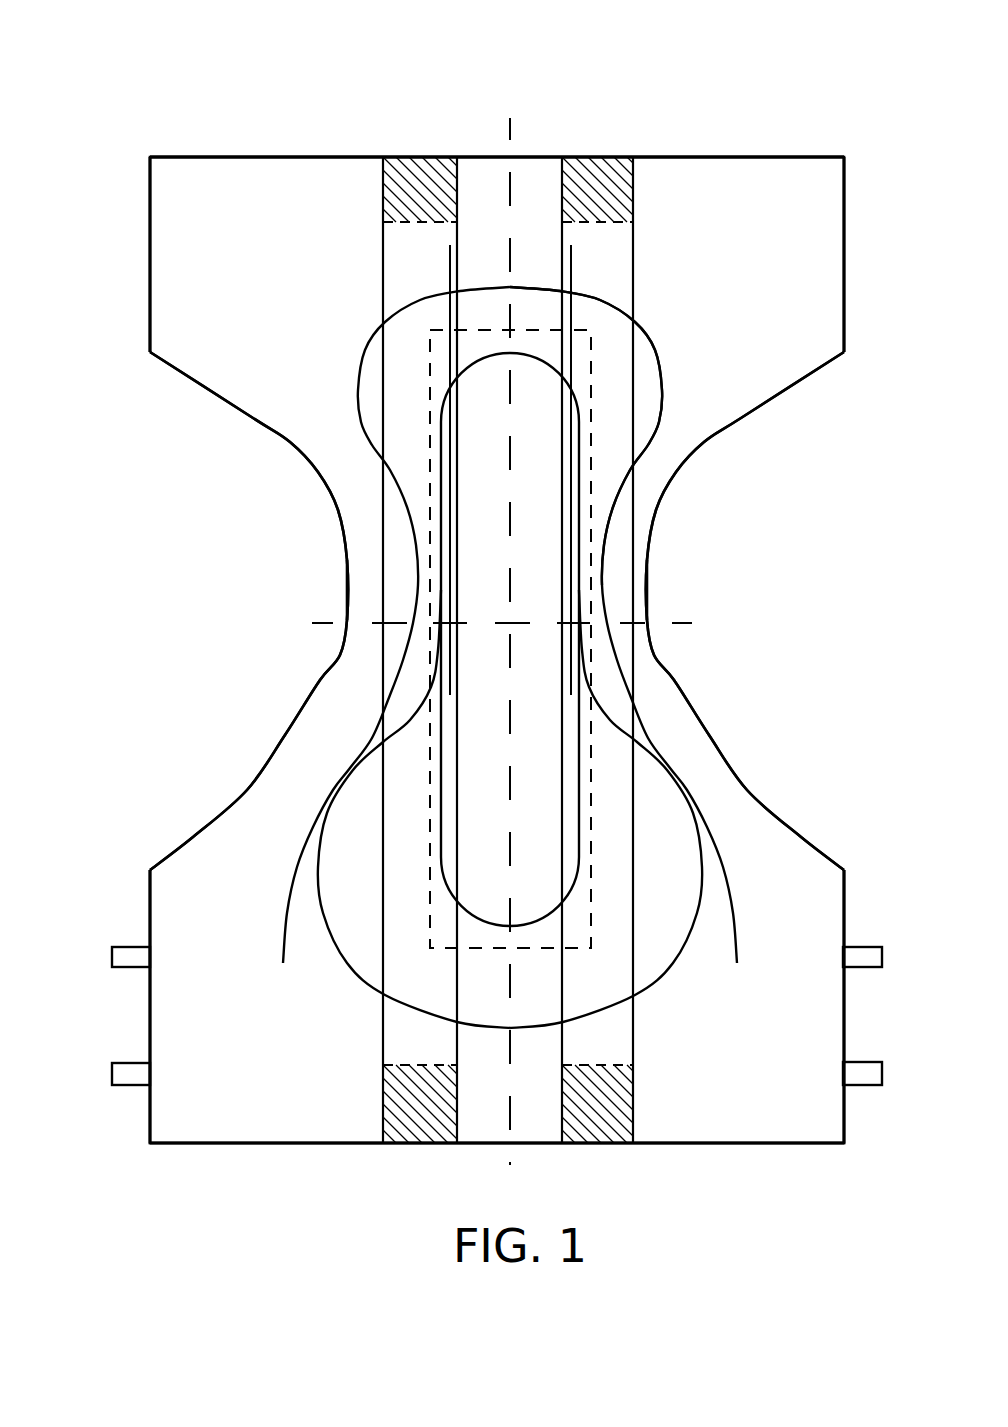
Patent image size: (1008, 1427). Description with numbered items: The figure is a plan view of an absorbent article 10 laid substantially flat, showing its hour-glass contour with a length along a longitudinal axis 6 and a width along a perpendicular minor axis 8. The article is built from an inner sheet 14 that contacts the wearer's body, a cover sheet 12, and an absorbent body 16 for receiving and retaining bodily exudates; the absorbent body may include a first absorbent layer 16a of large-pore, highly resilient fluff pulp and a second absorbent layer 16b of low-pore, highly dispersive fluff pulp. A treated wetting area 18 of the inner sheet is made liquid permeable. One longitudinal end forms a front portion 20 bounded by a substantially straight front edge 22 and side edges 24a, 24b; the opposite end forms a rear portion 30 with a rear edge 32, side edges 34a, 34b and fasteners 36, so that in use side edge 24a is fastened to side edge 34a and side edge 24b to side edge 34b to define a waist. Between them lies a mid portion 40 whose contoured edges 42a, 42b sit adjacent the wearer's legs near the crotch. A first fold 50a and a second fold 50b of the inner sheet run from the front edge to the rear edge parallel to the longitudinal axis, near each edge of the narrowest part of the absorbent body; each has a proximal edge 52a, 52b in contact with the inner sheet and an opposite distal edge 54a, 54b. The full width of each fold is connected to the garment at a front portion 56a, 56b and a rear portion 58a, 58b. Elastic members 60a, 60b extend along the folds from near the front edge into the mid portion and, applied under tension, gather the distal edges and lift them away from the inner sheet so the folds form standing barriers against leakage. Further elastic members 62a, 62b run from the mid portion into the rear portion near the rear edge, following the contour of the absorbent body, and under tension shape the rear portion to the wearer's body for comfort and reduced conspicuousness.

The longitudinal axis 6 is at (505, 127).
The minor axis 8 is at (690, 625).
The absorbent article 10 is at (175, 110).
The cover sheet 12 is at (270, 192).
The inner sheet 14 is at (177, 216).
The absorbent body 16 is at (646, 396).
The first absorbent layer 16a is at (440, 833).
The second absorbent layer 16b is at (657, 355).
The wetting area 18 is at (441, 330).
The front portion 20 is at (131, 257).
The front edge 22 is at (745, 156).
The side edge 24a is at (150, 180).
The side edge 24b is at (844, 276).
The rear portion 30 is at (126, 1008).
The rear edge 32 is at (735, 1145).
The side edge 34a is at (150, 893).
The side edge 34b is at (844, 880).
The fasteners 36 is at (112, 957).
The mid portion 40 is at (303, 573).
The contoured edge 42a is at (252, 420).
The contoured edge 42b is at (752, 408).
The first fold 50a is at (428, 168).
The second fold 50b is at (593, 168).
The proximal edge 52a is at (383, 289).
The proximal edge 52b is at (633, 293).
The distal edge 54a is at (450, 285).
The distal edge 54b is at (561, 788).
The front portion 56a is at (383, 189).
The front portion 56b is at (618, 192).
The rear portion 58a is at (395, 1088).
The rear portion 58b is at (625, 1088).
The elastic member 60a is at (455, 252).
The elastic member 60b is at (572, 280).
The elastic member 62a is at (283, 930).
The elastic member 62b is at (738, 930).